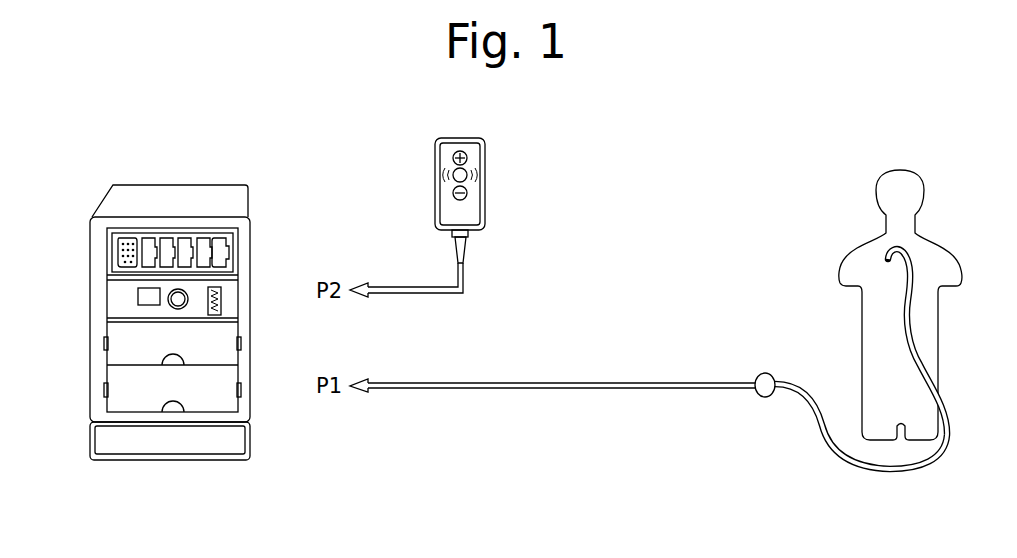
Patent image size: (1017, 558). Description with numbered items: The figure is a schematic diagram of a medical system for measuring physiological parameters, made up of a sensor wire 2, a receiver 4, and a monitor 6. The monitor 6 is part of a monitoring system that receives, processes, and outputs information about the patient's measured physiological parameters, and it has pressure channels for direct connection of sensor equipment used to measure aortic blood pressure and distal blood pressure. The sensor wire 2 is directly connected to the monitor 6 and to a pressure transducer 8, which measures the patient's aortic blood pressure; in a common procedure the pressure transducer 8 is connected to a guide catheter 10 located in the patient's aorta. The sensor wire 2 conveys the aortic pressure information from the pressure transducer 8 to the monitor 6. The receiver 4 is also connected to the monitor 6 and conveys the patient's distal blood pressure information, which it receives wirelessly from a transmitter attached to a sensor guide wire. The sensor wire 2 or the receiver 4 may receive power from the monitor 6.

The sensor wire 2 is at (568, 383).
The receiver 4 is at (485, 185).
The monitor 6 is at (252, 238).
The pressure transducer 8 is at (765, 373).
The guide catheter 10 is at (883, 470).